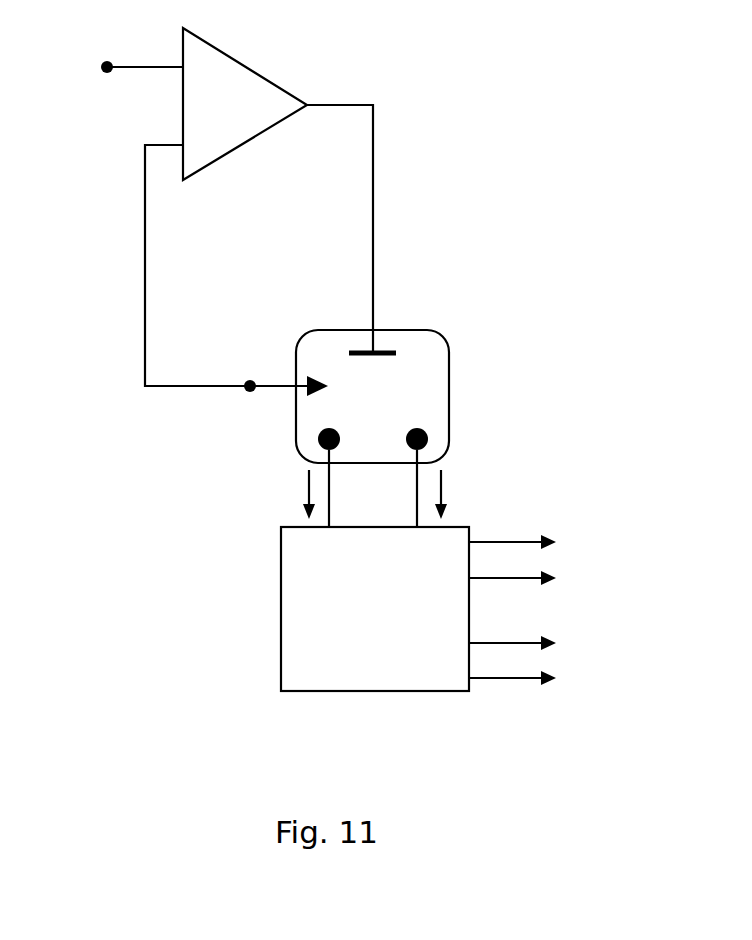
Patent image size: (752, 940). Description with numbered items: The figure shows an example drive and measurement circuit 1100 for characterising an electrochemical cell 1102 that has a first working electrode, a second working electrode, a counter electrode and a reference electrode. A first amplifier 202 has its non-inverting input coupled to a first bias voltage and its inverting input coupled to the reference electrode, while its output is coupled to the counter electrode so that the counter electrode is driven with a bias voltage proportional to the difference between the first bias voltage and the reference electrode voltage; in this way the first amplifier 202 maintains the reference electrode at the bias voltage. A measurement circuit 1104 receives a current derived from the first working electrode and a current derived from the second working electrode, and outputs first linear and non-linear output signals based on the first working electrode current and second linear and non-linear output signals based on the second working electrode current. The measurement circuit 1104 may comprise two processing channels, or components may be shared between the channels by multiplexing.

The first amplifier 202 is at (275, 85).
The drive and measurement circuit 1100 is at (565, 212).
The electrochemical cell 1102 is at (345, 330).
The measurement circuit 1104 is at (414, 627).